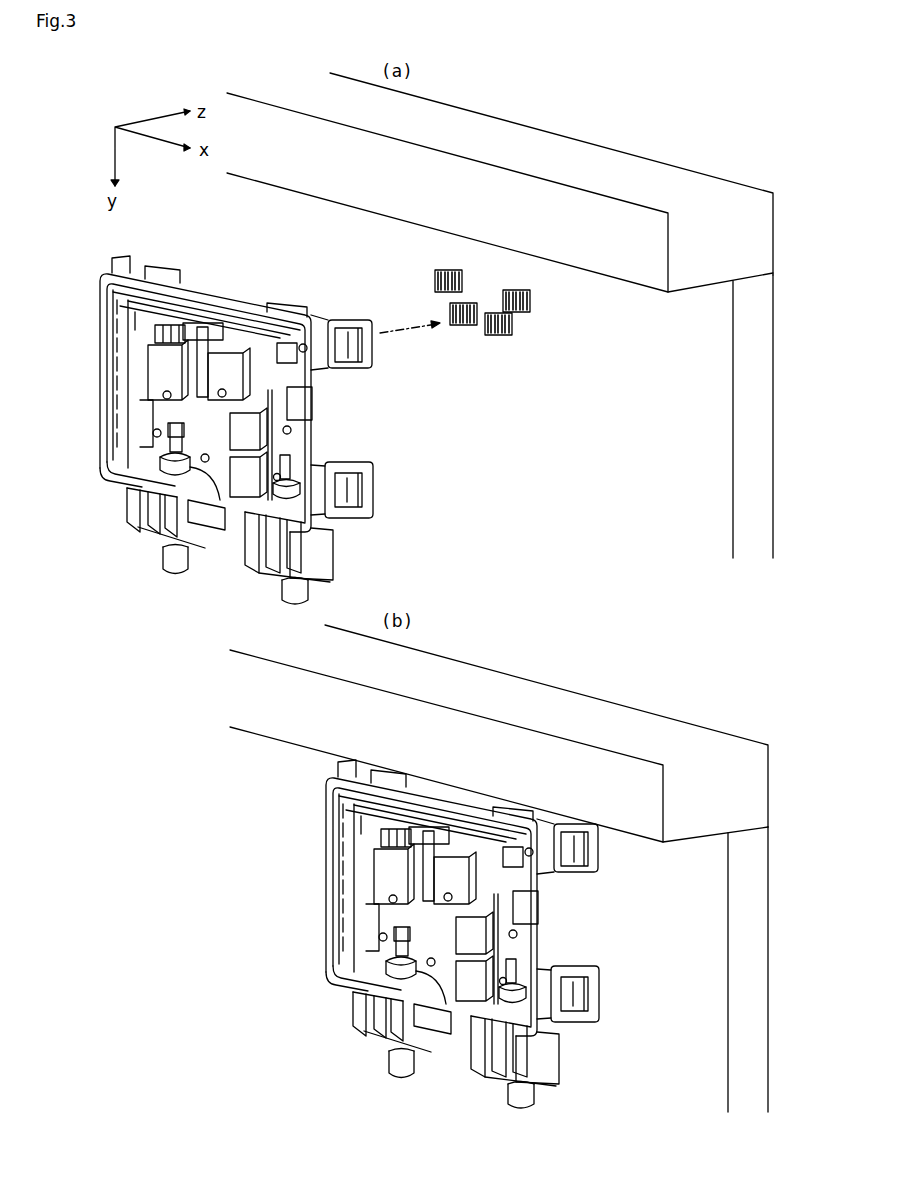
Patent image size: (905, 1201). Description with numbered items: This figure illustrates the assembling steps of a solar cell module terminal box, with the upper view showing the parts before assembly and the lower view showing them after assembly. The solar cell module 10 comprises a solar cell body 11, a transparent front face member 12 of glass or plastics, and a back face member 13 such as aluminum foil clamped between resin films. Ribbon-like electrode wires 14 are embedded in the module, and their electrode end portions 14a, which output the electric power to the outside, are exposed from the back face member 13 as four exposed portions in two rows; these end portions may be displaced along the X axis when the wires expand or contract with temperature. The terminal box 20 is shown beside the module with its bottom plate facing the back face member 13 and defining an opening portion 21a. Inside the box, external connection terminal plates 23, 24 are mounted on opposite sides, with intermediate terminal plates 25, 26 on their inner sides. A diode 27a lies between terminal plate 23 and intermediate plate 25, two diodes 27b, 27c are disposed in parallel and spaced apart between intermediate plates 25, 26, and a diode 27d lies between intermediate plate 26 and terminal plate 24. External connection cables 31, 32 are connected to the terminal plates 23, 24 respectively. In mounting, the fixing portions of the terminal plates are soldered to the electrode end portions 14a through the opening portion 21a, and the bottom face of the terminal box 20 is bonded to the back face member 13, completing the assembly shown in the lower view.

The solar cell module 10 is at (560, 149).
The solar cell body 11 is at (757, 460).
The front face member 12 is at (780, 358).
The back face member 13 is at (623, 306).
The ribbon-like electrode wire 14 is at (472, 308).
The electrode end portion 14a is at (448, 318).
The terminal box 20 is at (370, 546).
The opening portion 21a is at (245, 345).
The external connection terminal plate 23 is at (150, 325).
The external connection terminal plate 24 is at (355, 462).
The intermediate terminal plate 25 is at (145, 497).
The intermediate terminal plate 26 is at (318, 457).
The diode 27a is at (195, 318).
The diode 27b is at (310, 438).
The diode 27c is at (242, 487).
The diode 27d is at (318, 402).
The external connection cable 31 is at (177, 580).
The external connection cable 32 is at (280, 587).